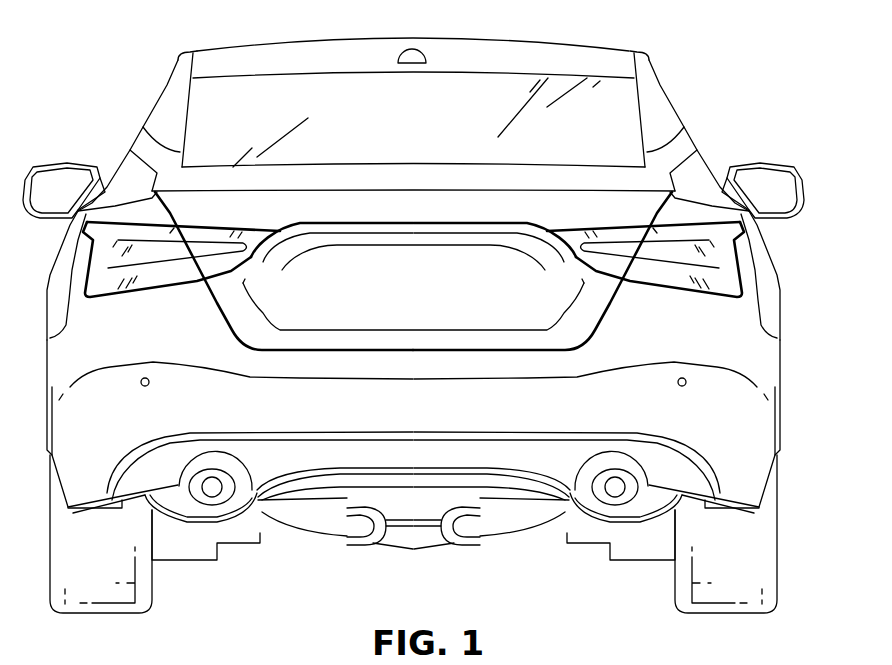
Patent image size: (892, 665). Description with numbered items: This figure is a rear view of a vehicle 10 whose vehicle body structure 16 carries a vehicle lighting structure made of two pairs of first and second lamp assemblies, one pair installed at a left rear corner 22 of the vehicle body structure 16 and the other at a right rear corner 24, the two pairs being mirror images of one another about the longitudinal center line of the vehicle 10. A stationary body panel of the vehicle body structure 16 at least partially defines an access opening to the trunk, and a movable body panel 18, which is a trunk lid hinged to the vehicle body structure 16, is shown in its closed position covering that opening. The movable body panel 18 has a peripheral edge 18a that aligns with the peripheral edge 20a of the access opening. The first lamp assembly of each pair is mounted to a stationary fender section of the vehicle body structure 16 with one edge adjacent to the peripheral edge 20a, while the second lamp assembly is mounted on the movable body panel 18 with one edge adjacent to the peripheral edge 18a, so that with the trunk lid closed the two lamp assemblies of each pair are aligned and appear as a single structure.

The vehicle 10 is at (127, 33).
The vehicle body structure 16 is at (536, 32).
The movable body panel 18 is at (610, 309).
The peripheral edge 18a is at (217, 312).
The peripheral edge 20a is at (255, 318).
The left rear corner 22 is at (85, 243).
The right rear corner 24 is at (742, 243).